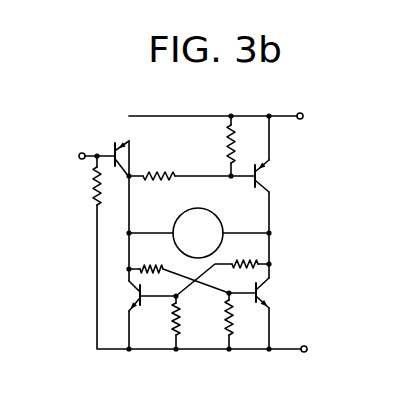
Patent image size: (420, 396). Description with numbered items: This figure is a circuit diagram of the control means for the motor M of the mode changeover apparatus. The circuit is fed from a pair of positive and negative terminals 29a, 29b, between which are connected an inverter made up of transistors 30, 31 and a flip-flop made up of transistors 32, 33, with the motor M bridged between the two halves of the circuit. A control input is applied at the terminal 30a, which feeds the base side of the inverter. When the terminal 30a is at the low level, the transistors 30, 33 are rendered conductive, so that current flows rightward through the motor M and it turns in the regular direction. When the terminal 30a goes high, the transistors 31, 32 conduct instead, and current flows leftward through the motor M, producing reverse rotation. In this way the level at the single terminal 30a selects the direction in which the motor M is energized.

The transistor 30 is at (127, 155).
The transistor 31 is at (272, 178).
The transistor 32 is at (133, 293).
The transistor 33 is at (272, 294).
The motor M is at (221, 221).
The terminal 30a is at (79, 161).
The positive terminal 29a is at (303, 113).
The negative terminal 29b is at (307, 350).